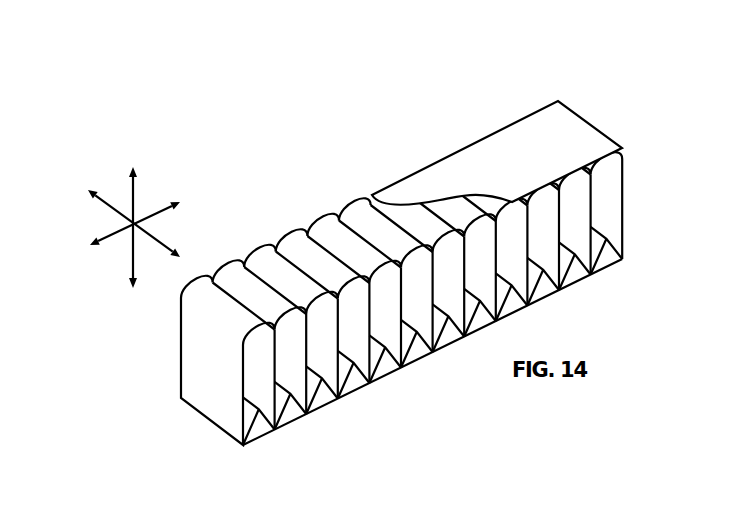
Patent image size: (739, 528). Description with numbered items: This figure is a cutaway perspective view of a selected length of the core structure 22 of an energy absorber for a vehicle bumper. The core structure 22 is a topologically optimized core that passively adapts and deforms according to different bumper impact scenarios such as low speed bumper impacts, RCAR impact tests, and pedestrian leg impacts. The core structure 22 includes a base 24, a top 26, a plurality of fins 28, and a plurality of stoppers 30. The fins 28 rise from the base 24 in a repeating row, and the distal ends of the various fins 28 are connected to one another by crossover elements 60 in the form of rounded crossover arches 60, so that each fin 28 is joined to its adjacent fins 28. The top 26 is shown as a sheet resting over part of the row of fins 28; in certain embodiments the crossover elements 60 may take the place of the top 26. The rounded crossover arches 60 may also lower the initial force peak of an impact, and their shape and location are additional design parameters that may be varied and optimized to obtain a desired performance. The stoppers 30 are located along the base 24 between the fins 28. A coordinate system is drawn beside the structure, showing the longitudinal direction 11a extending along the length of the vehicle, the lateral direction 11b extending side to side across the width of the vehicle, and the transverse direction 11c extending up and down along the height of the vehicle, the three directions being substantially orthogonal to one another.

The core structure 22 is at (592, 65).
The base 24 is at (439, 301).
The top 26 is at (547, 155).
The fins 28 is at (610, 202).
The stoppers 30 is at (250, 416).
The crossover elements 60 is at (288, 232).
The longitudinal direction 11a is at (132, 195).
The lateral direction 11b is at (105, 232).
The transverse direction 11c is at (167, 242).